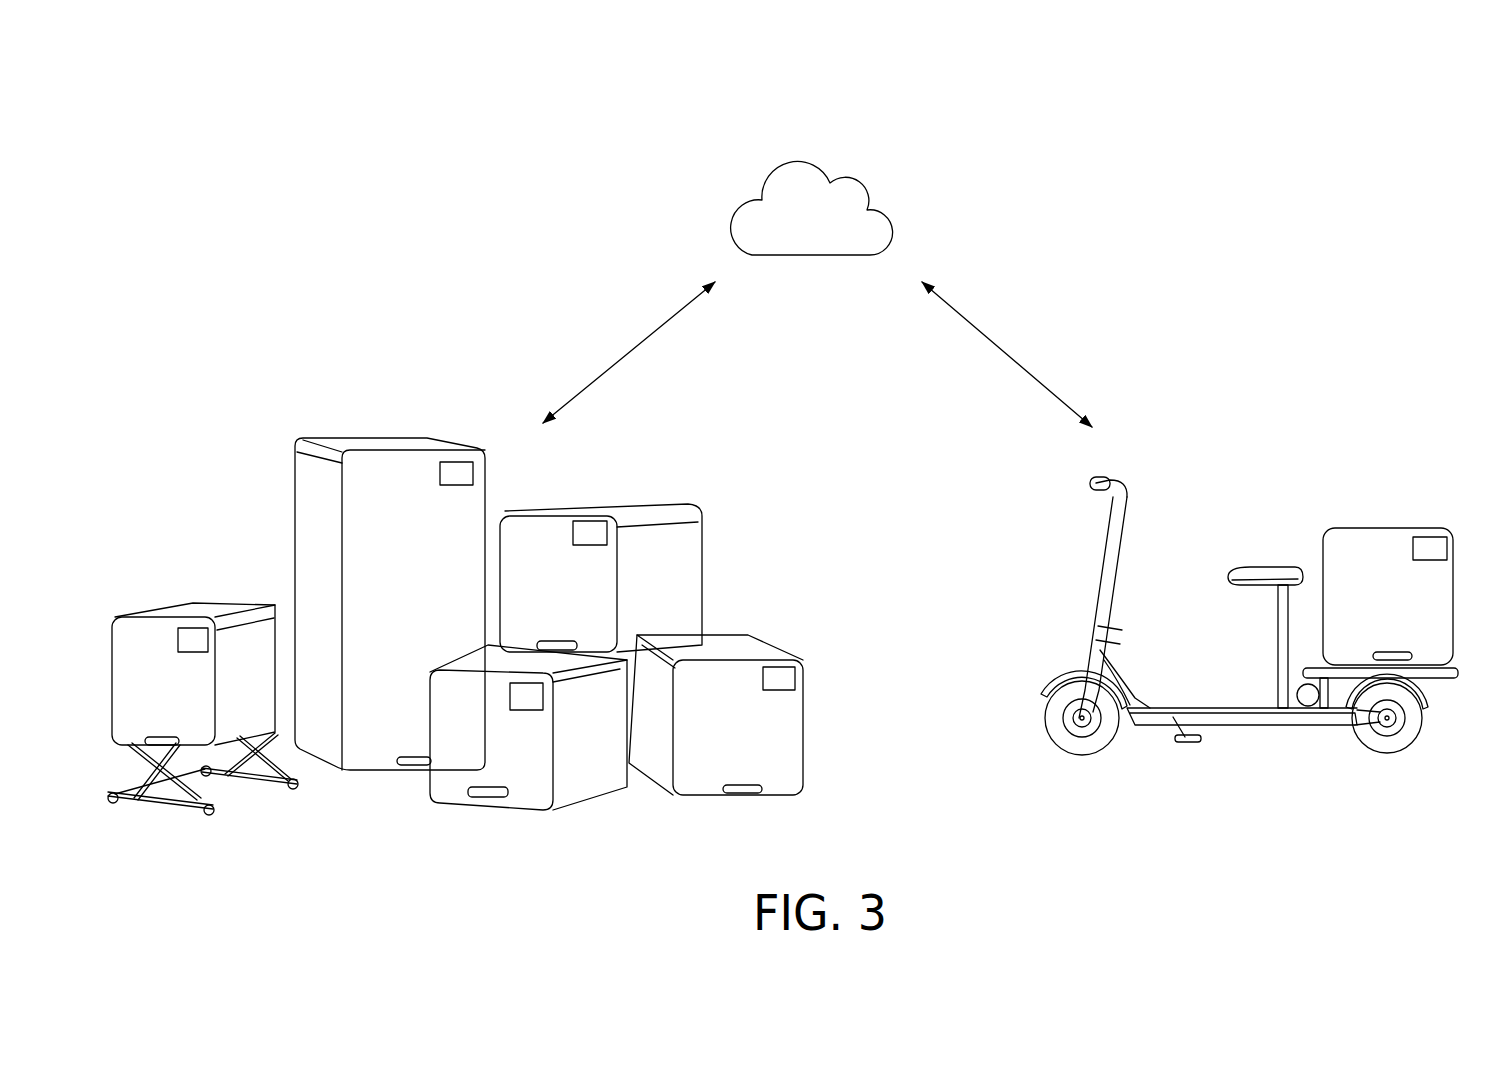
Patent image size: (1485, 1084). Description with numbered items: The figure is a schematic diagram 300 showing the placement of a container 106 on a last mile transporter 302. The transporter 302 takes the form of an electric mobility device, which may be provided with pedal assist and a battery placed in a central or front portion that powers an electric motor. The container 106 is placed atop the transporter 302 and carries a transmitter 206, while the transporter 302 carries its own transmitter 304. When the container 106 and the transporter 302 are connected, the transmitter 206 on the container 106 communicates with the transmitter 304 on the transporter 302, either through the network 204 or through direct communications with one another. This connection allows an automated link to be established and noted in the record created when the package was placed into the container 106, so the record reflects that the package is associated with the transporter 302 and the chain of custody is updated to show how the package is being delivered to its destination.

The schematic diagram 300 is at (428, 141).
The network 204 is at (883, 232).
The container 106 is at (138, 632).
The transmitter 206 is at (188, 640).
The last mile transporter 302 is at (1110, 545).
The transmitter 304 is at (1306, 698).